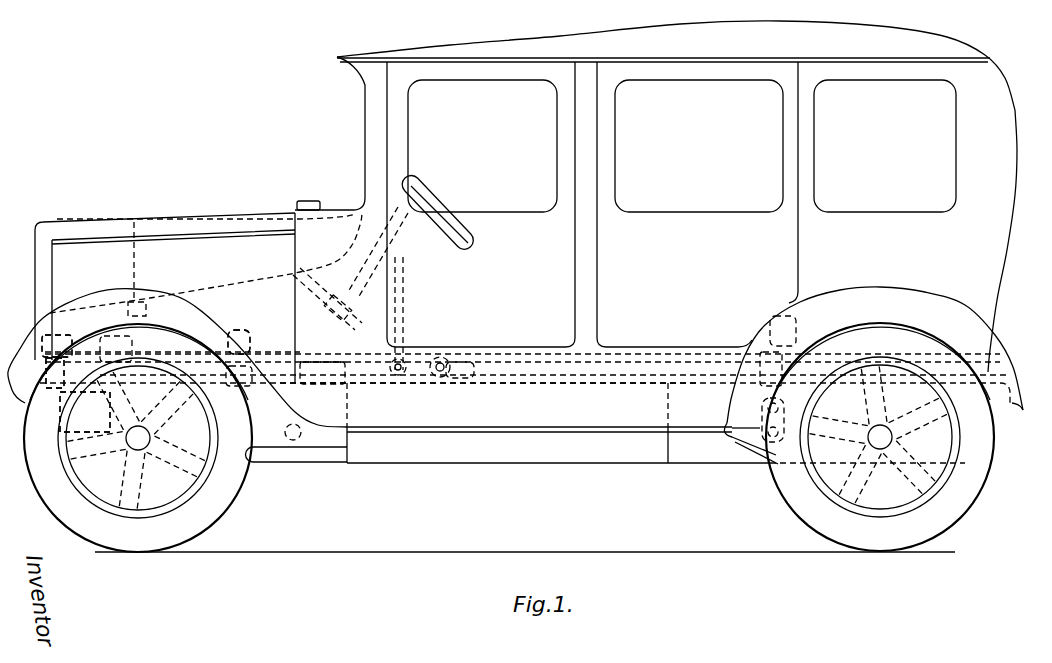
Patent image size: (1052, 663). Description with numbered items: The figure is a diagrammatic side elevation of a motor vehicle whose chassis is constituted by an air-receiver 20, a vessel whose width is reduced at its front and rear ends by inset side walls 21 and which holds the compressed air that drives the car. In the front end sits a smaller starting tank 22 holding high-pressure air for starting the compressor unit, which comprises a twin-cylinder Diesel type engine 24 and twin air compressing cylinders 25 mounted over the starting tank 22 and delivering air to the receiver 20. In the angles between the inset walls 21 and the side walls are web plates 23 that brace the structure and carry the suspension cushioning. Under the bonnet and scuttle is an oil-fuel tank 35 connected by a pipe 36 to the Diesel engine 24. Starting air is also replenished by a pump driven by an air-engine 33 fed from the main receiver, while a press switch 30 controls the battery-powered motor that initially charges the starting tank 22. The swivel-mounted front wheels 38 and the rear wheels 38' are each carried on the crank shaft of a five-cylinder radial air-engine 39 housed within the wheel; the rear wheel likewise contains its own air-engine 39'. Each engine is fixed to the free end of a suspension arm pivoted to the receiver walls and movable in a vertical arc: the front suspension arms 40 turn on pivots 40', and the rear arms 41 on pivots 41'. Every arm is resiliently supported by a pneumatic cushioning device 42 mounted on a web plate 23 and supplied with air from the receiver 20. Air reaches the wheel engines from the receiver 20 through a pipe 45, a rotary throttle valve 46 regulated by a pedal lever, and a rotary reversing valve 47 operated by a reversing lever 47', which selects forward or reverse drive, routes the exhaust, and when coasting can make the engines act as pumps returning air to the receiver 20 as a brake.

The air-receiver 20 is at (523, 462).
The inset side walls 21 is at (668, 444).
The starting tank 22 is at (64, 430).
The web plates 23 is at (716, 386).
The Diesel type engine 24 is at (45, 348).
The air compressing cylinders 25 is at (44, 350).
The press switch 30 is at (337, 299).
The air-engine 33 is at (176, 350).
The oil-fuel tank 35 is at (280, 198).
The pipe 36 is at (96, 300).
The front wheels 38 is at (136, 438).
The rear wheels 38' is at (890, 437).
The air-engines 39 is at (136, 440).
The rear wheel spokes 39' is at (878, 434).
The front suspension arms 40 is at (297, 464).
The front arm pivots 40' is at (314, 440).
The rear suspension arms 41 is at (871, 388).
The rear arm pivots 41' is at (721, 442).
The pneumatic cushioning device 42 is at (252, 346).
The pipe 45 is at (478, 368).
The rotary throttle valve 46 is at (446, 358).
The rotary reversing valve 47 is at (412, 382).
The reversing lever 47' is at (421, 313).